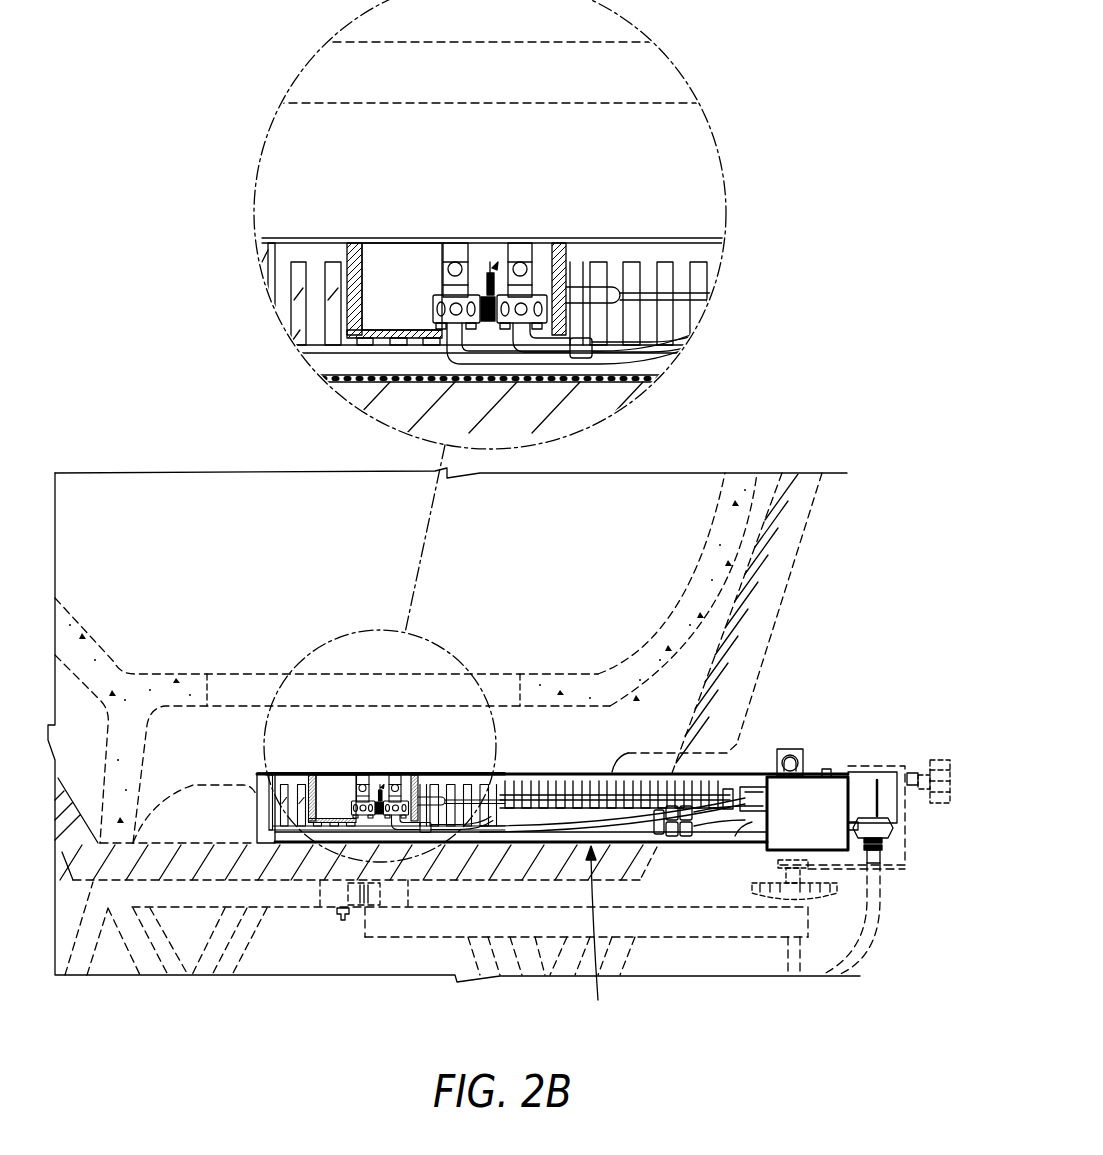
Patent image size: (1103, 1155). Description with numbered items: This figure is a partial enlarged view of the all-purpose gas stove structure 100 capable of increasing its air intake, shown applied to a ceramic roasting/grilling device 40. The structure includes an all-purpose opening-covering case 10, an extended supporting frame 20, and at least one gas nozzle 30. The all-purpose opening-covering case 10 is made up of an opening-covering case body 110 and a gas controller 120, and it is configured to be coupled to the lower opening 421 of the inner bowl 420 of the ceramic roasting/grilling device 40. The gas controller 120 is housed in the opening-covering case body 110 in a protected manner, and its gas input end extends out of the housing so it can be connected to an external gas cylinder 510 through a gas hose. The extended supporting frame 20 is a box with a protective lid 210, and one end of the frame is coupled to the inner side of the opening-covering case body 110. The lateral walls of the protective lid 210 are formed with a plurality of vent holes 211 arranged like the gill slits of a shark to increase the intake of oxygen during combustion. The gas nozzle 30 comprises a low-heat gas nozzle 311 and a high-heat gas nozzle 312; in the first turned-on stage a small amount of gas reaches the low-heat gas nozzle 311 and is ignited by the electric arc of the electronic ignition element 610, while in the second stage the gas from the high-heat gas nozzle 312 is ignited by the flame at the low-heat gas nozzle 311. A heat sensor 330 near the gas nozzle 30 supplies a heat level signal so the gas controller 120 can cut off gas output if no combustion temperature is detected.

The all-purpose opening-covering case 10 is at (910, 655).
The extended supporting frame 20 is at (660, 364).
The gas nozzle 30 is at (386, 775).
The ceramic roasting/grilling device 40 is at (800, 517).
The all-purpose gas stove structure 100 is at (858, 740).
The opening-covering case body 110 is at (796, 747).
The gas controller 120 is at (832, 770).
The protective lid 210 is at (603, 782).
The vent holes 211 is at (522, 790).
The low-heat gas nozzle 311 is at (523, 252).
The high-heat gas nozzle 312 is at (458, 252).
The heat sensor 330 is at (479, 292).
The inner bowl 420 is at (716, 538).
The lower opening 421 is at (234, 662).
The external gas cylinder 510 is at (872, 905).
The electronic ignition element 610 is at (494, 268).